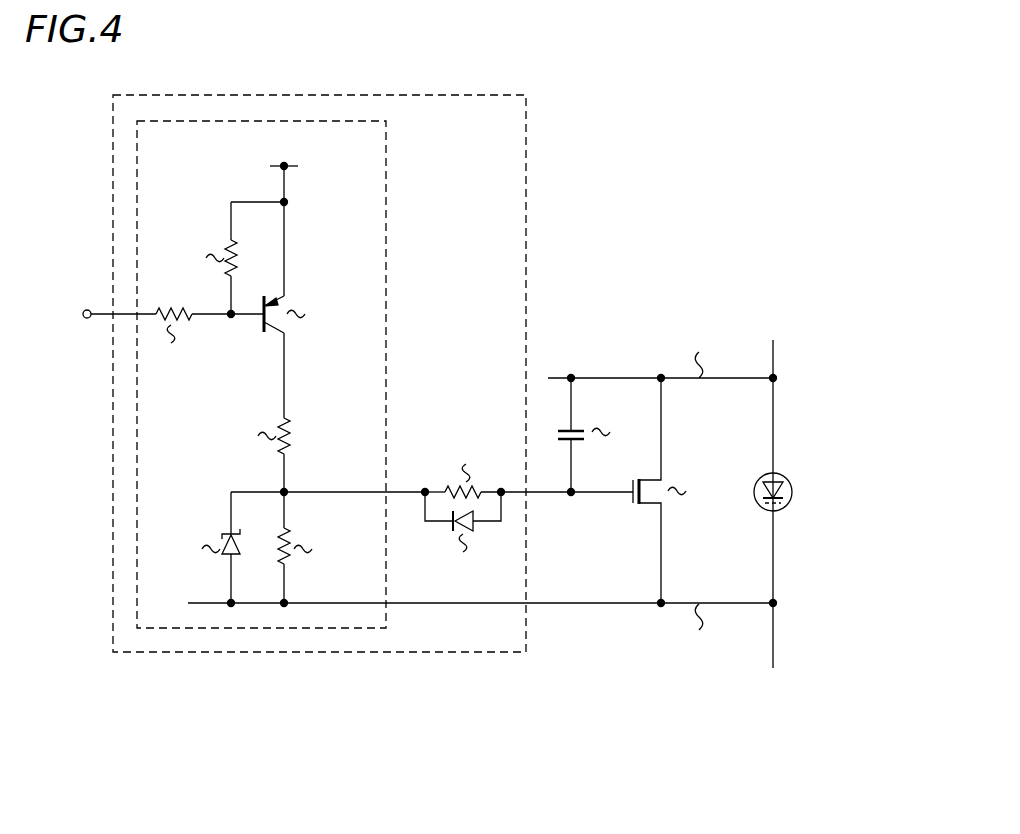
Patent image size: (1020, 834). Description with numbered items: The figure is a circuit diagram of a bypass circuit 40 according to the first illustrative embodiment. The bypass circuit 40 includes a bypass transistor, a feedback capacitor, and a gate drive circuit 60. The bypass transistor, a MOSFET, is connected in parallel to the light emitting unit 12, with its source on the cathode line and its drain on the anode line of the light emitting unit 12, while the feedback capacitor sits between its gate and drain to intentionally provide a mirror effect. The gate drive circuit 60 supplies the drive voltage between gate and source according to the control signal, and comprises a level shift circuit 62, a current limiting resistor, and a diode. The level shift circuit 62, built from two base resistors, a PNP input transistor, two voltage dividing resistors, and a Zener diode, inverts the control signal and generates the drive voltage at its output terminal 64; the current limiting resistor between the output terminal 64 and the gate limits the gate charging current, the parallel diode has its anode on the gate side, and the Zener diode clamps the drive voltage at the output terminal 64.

The bypass circuit 40 is at (433, 759).
The gate drive circuit 60 is at (325, 652).
The level shift circuit 62 is at (387, 306).
The output terminal 64 is at (389, 488).
The light emitting unit 12 is at (793, 490).